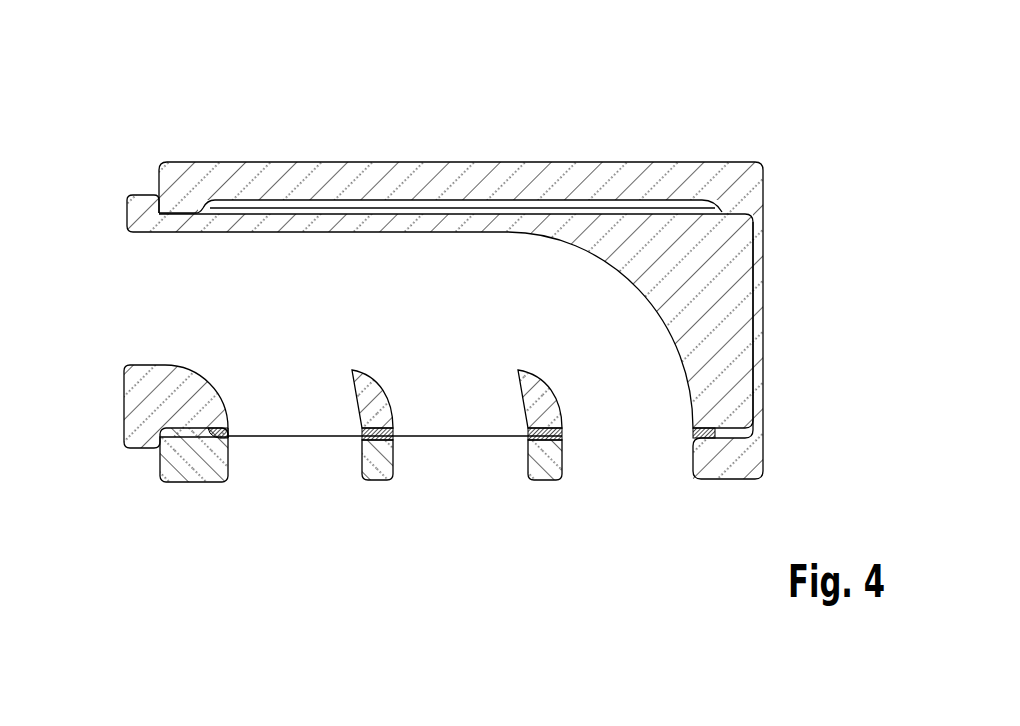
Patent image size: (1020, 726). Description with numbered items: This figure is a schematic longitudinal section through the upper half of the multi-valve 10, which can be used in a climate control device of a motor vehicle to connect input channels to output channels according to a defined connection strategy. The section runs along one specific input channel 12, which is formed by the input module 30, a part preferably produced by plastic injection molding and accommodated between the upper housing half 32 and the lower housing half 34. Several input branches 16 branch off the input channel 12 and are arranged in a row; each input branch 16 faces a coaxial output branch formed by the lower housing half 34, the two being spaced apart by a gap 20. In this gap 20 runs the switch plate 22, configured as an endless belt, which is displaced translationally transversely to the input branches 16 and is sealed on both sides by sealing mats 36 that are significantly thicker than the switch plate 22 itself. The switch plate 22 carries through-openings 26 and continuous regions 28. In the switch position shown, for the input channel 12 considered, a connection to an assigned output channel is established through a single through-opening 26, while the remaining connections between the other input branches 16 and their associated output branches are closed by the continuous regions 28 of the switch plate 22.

The multi-valve 10 is at (757, 120).
The input channel 12 is at (148, 300).
The input branch 16 is at (270, 413).
The gap 20 is at (722, 436).
The switch plate 22 is at (310, 447).
The through-opening 26 is at (587, 435).
The continuous region 28 is at (450, 437).
The input module 30 is at (717, 258).
The upper housing half 32 is at (730, 183).
The lower housing half 34 is at (730, 463).
The sealing mat 36 is at (376, 430).